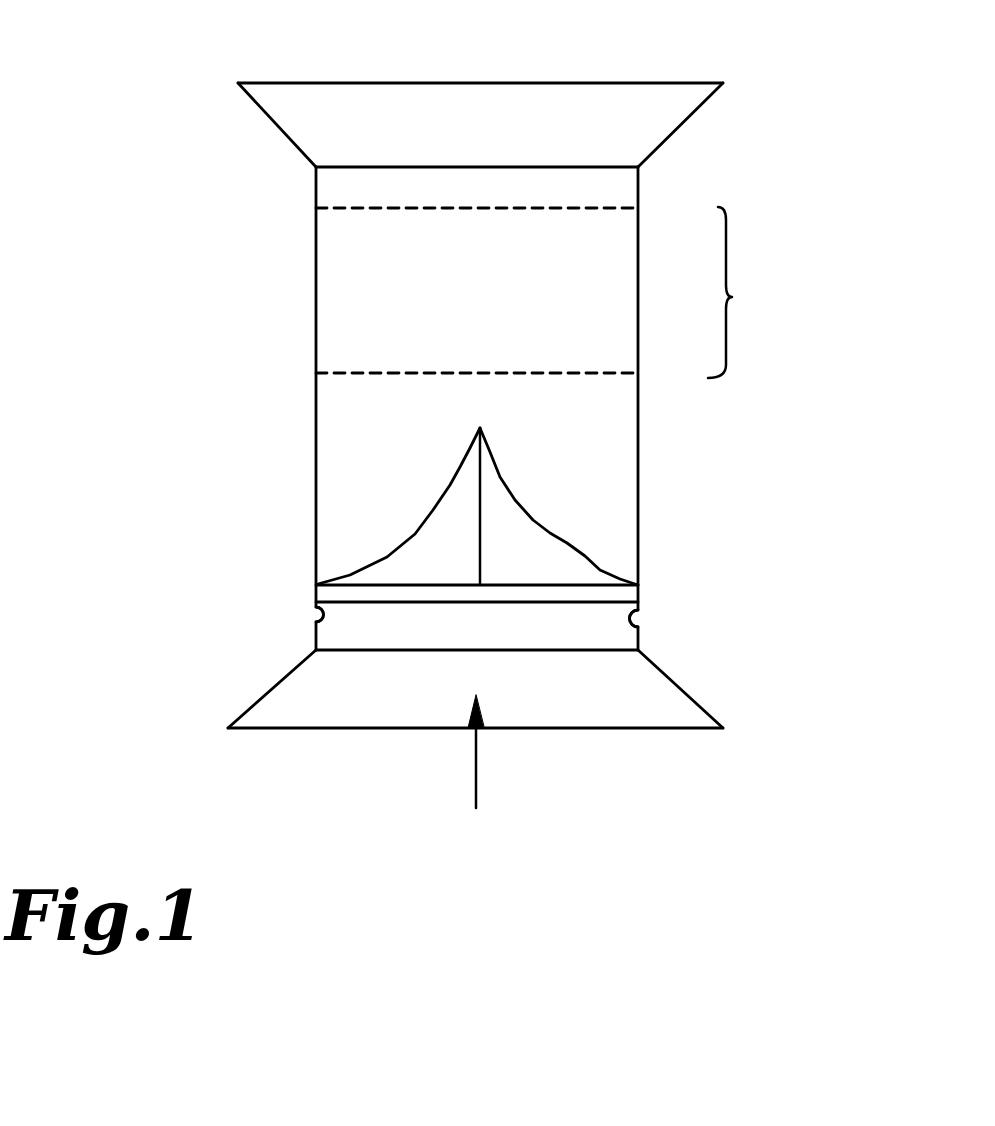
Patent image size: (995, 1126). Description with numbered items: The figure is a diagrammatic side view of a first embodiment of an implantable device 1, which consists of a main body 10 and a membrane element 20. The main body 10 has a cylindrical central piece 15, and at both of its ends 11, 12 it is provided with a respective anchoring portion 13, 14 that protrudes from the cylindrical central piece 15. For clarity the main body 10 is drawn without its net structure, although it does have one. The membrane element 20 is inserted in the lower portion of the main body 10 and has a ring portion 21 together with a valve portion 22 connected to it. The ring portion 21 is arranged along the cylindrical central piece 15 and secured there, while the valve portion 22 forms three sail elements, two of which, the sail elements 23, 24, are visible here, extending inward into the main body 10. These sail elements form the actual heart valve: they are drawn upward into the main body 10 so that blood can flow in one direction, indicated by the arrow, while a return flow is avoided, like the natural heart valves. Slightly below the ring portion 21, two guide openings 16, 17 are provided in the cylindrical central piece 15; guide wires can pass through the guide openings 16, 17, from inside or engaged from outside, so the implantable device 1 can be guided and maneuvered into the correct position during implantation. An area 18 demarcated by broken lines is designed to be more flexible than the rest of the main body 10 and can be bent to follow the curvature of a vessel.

The implantable device 1 is at (103, 32).
The main body 10 is at (316, 250).
The end 11 is at (225, 90).
The end 12 is at (200, 727).
The anchoring portion 13 is at (303, 126).
The anchoring portion 14 is at (290, 698).
The cylindrical central piece 15 is at (316, 382).
The guide opening 16 is at (318, 620).
The guide opening 17 is at (640, 619).
The area 18 is at (557, 292).
The membrane element 20 is at (385, 557).
The ring portion 21 is at (630, 594).
The valve portion 22 is at (543, 546).
The sail element 23 is at (362, 577).
The sail element 24 is at (503, 502).